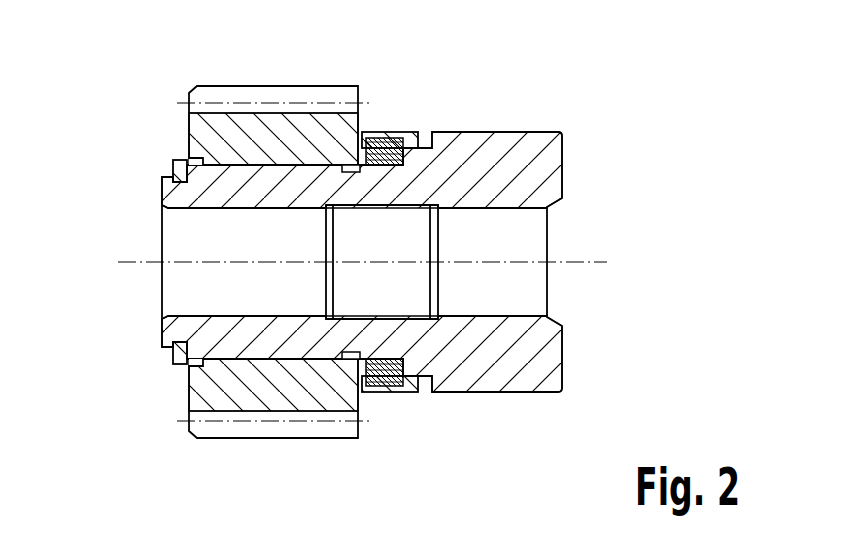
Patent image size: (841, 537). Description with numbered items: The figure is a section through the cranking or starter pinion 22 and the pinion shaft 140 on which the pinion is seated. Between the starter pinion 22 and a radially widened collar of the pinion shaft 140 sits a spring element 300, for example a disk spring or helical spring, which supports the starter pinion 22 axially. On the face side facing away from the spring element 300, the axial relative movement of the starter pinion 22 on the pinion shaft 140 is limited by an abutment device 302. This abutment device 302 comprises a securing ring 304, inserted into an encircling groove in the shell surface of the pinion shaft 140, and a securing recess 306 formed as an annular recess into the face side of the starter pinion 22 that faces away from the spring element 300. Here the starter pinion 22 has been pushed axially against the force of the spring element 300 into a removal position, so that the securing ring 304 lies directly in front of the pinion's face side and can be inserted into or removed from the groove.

The starter pinion 22 is at (248, 135).
The pinion shaft 140 is at (503, 167).
The spring element 300 is at (376, 392).
The abutment device 302 is at (163, 162).
The securing ring 304 is at (173, 352).
The securing recess 306 is at (189, 145).